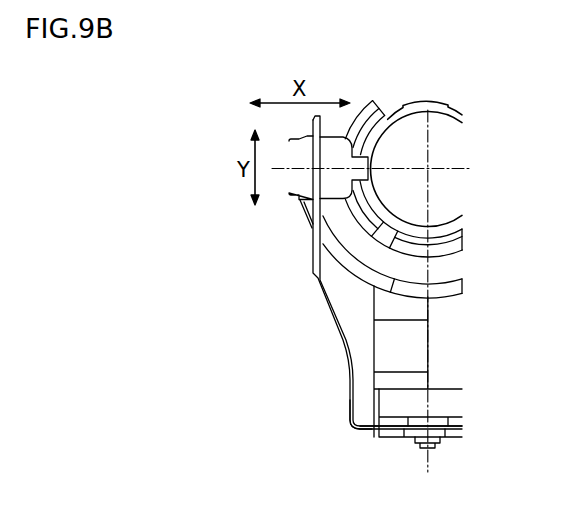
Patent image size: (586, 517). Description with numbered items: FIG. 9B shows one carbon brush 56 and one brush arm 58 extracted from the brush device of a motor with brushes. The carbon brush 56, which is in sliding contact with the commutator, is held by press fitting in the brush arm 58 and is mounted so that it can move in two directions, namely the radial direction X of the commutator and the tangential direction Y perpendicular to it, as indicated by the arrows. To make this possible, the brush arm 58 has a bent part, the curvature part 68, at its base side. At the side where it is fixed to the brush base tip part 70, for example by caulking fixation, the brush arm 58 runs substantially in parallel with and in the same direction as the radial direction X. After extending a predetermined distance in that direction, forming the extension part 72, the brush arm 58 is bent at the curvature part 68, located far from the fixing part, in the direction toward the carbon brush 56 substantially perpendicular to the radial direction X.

The carbon brush 56 is at (347, 163).
The brush arm 58 is at (347, 346).
The curvature part 68 is at (352, 430).
The brush base tip part 70 is at (460, 440).
The extension part 72 is at (369, 430).